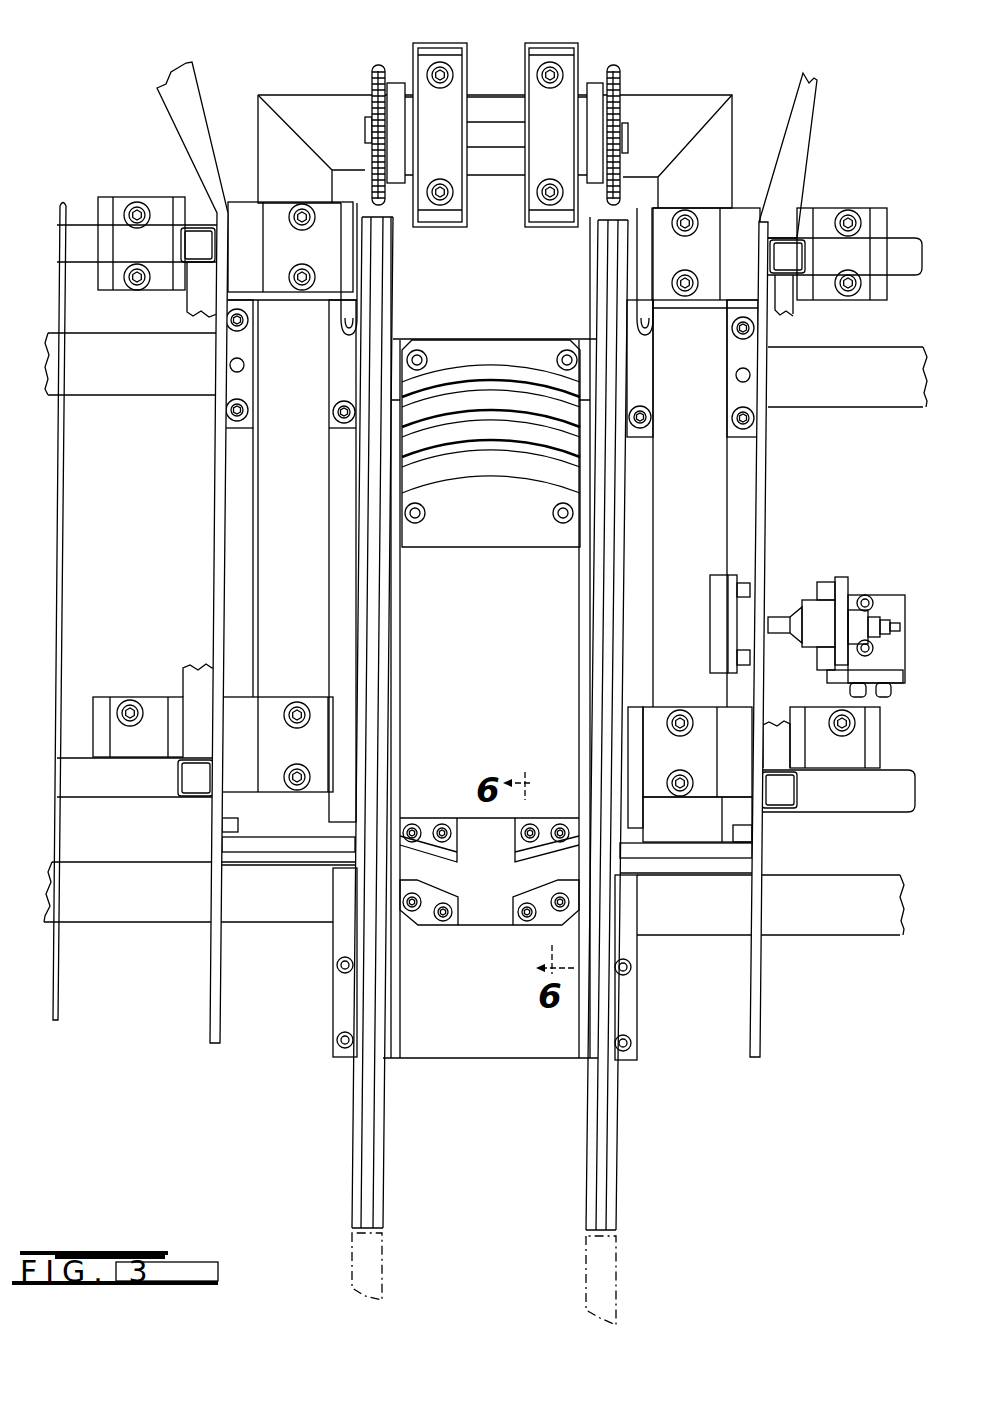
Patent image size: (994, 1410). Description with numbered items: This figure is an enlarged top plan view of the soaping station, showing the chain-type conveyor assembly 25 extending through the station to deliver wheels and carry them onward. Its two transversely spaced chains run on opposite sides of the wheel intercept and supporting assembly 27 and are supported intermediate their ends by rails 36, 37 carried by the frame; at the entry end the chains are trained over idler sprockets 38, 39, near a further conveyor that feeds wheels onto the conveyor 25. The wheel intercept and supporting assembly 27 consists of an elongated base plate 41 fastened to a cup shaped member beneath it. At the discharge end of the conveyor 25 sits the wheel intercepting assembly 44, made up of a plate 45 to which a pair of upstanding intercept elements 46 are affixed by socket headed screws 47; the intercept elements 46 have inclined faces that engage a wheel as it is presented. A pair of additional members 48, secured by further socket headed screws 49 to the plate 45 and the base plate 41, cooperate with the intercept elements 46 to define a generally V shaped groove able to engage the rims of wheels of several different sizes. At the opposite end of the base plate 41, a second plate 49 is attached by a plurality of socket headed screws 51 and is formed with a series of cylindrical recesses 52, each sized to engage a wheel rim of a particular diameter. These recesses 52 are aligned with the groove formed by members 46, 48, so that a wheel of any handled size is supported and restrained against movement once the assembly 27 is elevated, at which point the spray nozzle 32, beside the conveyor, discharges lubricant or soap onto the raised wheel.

The conveyor assembly 25 is at (634, 78).
The wheel intercept and supporting assembly 27 is at (586, 628).
The spray nozzle 32 is at (813, 570).
The rail 36 is at (622, 518).
The rail 37 is at (360, 528).
The idler sprocket 38 is at (615, 63).
The idler sprocket 39 is at (379, 63).
The base plate 41 is at (592, 563).
The wheel intercepting assembly 44 is at (434, 810).
The plate 45 is at (473, 918).
The intercept element 46 is at (421, 918).
The socket headed screw 47 is at (400, 898).
The additional member 48 is at (410, 816).
The second plate 49 is at (450, 352).
The socket headed screw 51 is at (417, 352).
The cylindrical recess 52 is at (490, 385).